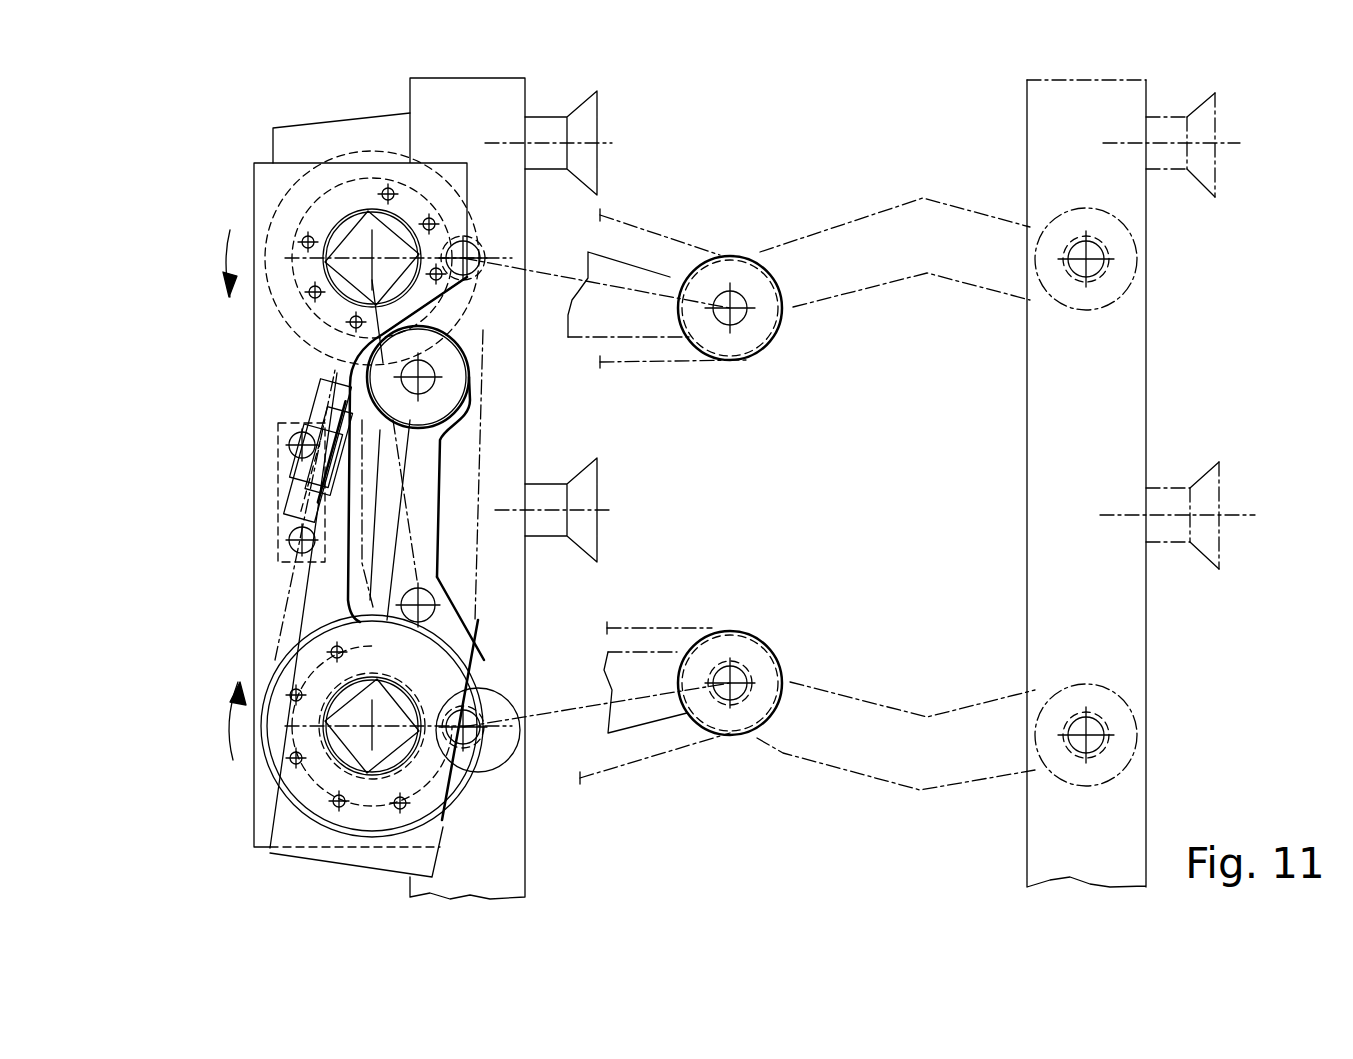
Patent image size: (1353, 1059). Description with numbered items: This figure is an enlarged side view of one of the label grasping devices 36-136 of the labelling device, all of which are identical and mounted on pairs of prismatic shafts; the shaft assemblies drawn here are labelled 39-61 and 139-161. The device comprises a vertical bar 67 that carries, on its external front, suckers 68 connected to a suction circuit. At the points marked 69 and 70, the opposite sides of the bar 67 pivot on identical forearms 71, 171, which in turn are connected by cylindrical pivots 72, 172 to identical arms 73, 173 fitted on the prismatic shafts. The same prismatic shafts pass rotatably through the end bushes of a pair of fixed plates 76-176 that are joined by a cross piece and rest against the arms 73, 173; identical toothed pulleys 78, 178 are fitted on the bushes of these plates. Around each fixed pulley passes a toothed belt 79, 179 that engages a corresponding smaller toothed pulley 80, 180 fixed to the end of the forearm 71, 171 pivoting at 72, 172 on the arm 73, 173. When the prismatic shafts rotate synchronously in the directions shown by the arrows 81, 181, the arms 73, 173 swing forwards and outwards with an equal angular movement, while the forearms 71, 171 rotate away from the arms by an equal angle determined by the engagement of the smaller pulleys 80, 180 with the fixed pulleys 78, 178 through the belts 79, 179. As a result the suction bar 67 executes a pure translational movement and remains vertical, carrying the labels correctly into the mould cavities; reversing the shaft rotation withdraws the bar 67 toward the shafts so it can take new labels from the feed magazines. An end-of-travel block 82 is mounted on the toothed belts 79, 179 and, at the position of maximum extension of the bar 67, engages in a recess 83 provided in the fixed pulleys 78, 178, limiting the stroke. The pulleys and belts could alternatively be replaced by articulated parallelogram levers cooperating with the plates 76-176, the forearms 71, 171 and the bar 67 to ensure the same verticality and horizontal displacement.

The label grasping devices 36-136 is at (1157, 82).
The drive shaft 39-61 is at (357, 240).
The drive shaft 139-161 is at (358, 763).
The vertical bar 67 is at (497, 78).
The suckers 68 is at (600, 119).
The pivot point 69 is at (470, 255).
The pivot point 70 is at (470, 733).
The forearm 71 is at (867, 213).
The cylindrical pivot 72 is at (436, 604).
The arm 73 is at (395, 113).
The plates 76-176 is at (254, 400).
The toothed pulley 78 is at (277, 208).
The toothed belt 79 is at (658, 363).
The smaller toothed pulley 80 is at (715, 260).
The arrow 81 is at (225, 258).
The end-of-travel block 82 is at (290, 482).
The recess 83 is at (445, 670).
The forearm 171 is at (437, 490).
The cylindrical pivot 172 is at (436, 378).
The arm 173 is at (270, 826).
The toothed pulley 178 is at (287, 647).
The toothed belt 179 is at (293, 607).
The smaller toothed pulley 180 is at (717, 630).
The arrow 181 is at (222, 715).